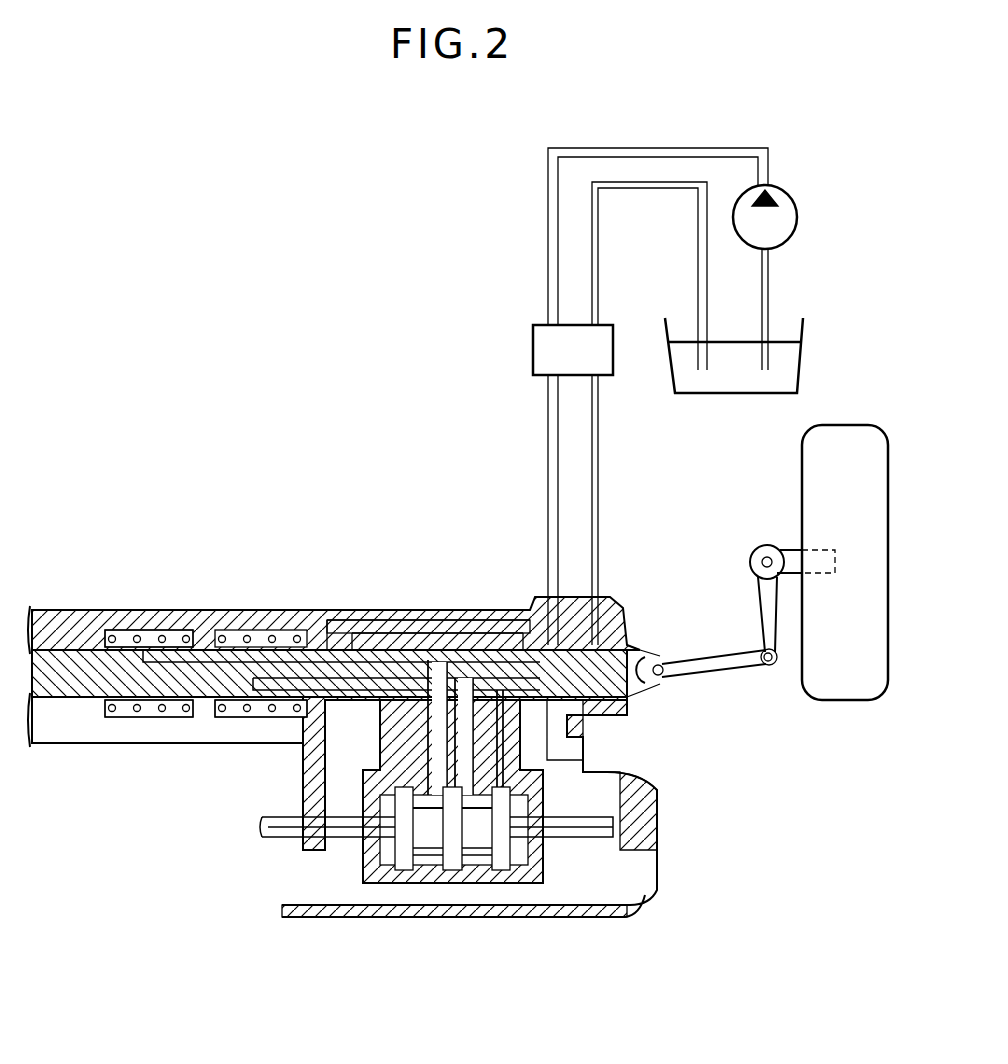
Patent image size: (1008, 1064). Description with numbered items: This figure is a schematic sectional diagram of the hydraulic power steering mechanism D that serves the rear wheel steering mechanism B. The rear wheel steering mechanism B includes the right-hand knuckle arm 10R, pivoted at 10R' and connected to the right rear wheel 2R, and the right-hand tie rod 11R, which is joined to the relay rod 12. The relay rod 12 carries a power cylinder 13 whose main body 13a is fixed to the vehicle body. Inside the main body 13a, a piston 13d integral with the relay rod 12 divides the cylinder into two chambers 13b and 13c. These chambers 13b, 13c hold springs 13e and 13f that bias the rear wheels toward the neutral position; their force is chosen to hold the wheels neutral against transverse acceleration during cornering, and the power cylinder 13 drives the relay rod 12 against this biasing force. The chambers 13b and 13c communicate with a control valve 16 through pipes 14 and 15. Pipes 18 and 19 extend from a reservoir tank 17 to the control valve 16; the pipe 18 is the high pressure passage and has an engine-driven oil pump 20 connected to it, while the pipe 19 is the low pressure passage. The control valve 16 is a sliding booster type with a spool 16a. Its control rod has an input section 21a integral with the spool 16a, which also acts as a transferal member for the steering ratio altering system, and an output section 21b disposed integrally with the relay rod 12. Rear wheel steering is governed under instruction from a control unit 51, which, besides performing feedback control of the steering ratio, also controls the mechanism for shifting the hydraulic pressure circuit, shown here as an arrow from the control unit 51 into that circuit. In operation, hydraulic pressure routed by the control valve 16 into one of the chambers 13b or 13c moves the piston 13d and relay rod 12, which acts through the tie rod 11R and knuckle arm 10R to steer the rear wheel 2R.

The right steerable wheel 2R is at (850, 427).
The right-hand knuckle arm 10R is at (731, 620).
The knuckle pivot 10R' is at (744, 536).
The right-hand tie rod 11R is at (727, 672).
The relay rod 12 is at (60, 745).
The power cylinder 13 is at (428, 605).
The main body 13a is at (428, 626).
The chamber 13b is at (118, 745).
The chamber 13c is at (284, 745).
The piston 13d is at (200, 745).
The spring 13e is at (138, 745).
The spring 13f is at (232, 745).
The pipe 14 is at (331, 610).
The pipe 15 is at (368, 630).
The control valve 16 is at (535, 885).
The spool 16a is at (450, 870).
The reservoir tank 17 is at (803, 356).
The pipe 18 is at (548, 262).
The pipe 19 is at (600, 432).
The oil pump 20 is at (797, 215).
The input section 21a is at (292, 840).
The output section 21b is at (375, 885).
The control unit 51 is at (533, 350).
The rear wheel steering mechanism B is at (773, 690).
The power steering mechanism D is at (262, 850).